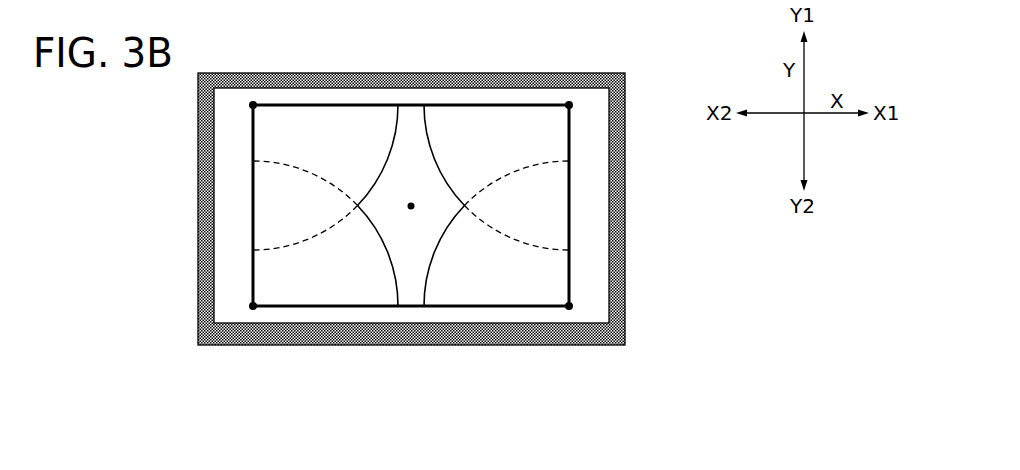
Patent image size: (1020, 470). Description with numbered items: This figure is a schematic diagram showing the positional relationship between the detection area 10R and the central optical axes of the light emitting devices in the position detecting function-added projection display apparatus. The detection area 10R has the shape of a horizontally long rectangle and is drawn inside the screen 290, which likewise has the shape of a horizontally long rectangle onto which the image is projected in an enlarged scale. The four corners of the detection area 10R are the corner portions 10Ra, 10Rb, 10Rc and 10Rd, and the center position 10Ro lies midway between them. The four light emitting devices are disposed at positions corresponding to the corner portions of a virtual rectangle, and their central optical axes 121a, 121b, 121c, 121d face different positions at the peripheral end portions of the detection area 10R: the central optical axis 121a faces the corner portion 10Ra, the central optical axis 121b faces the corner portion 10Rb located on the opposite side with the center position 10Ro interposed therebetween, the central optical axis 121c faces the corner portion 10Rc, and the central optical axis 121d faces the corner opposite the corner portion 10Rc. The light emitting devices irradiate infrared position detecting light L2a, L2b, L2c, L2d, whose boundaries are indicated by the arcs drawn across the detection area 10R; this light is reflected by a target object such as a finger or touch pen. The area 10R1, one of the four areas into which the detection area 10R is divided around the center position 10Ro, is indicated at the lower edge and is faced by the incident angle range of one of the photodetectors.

The detection area 10R is at (467, 248).
The area 10R1 is at (487, 317).
The center position 10Ro is at (410, 203).
The corner portion 10Ra is at (631, 347).
The corner portion 10Rb is at (315, 67).
The corner portion 10Rc is at (301, 347).
The corner of display region 10Rd is at (584, 67).
The central optical axis 121a is at (570, 308).
The central optical axis 121b is at (255, 103).
The central optical axis 121c is at (254, 308).
The central optical axis 121d is at (568, 103).
The position detecting light L2a is at (440, 243).
The position detecting light L2b is at (385, 157).
The position detecting light L2c is at (382, 243).
The position detecting light L2d is at (433, 147).
The screen 290 is at (600, 293).